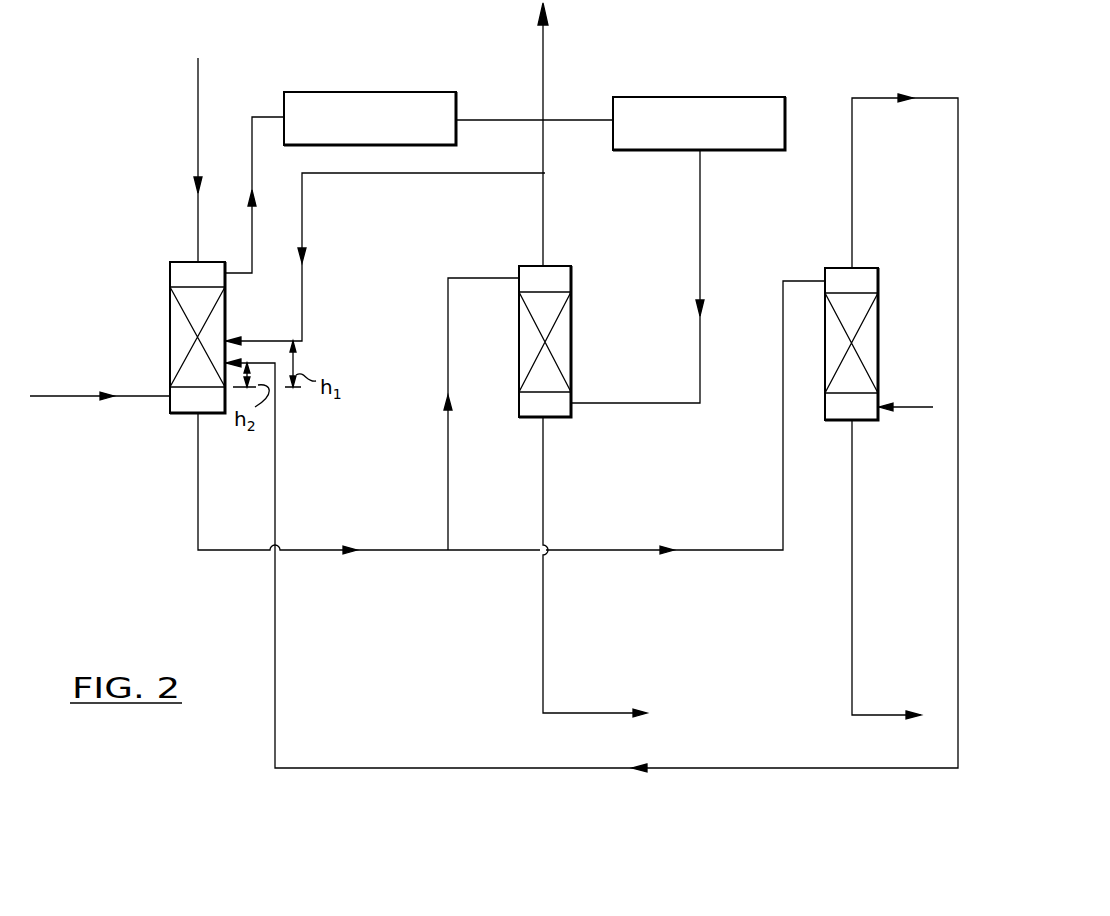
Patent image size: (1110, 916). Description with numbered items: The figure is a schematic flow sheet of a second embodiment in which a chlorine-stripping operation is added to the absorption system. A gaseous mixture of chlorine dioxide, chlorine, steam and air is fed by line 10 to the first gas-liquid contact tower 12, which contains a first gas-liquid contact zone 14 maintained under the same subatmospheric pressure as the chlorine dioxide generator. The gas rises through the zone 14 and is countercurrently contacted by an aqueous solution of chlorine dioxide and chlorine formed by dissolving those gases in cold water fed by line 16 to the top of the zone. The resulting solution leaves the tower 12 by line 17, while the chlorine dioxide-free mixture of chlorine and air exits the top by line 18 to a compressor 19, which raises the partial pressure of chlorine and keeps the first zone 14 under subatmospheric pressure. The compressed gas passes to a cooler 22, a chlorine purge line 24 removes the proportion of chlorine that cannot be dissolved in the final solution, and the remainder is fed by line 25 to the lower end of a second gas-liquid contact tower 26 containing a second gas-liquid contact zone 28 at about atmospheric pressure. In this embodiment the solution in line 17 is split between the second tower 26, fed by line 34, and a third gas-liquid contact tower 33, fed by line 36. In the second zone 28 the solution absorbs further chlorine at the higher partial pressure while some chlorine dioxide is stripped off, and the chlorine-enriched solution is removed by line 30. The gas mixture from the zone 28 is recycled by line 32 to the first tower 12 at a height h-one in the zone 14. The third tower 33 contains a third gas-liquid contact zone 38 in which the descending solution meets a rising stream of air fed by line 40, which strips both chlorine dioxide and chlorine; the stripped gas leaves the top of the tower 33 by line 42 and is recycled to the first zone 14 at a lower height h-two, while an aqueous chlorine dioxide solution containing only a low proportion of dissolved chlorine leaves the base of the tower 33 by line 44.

The feed line 10 is at (135, 398).
The first gas-liquid contact tower 12 is at (170, 272).
The first gas-liquid contact zone 14 is at (170, 318).
The water feed line 16 is at (198, 70).
The solution outlet line 17 is at (197, 498).
The gas outlet line 18 is at (252, 125).
The compressor 19 is at (407, 92).
The cooler 22 is at (723, 97).
The chlorine purge line 24 is at (545, 57).
The compressed chlorine feed line 25 is at (700, 229).
The second gas-liquid contact tower 26 is at (571, 273).
The second gas-liquid contact zone 28 is at (571, 330).
The chlorine-enriched solution outlet line 30 is at (543, 602).
The recycle gas line 32 is at (312, 243).
The third gas-liquid contact tower 33 is at (878, 278).
The solution feed line to second tower 34 is at (448, 308).
The solution feed line to third tower 36 is at (727, 552).
The third gas-liquid contact zone 38 is at (878, 333).
The air feed line 40 is at (912, 410).
The stripped gas recycle line 42 is at (872, 97).
The chlorine-lean solution outlet line 44 is at (852, 528).